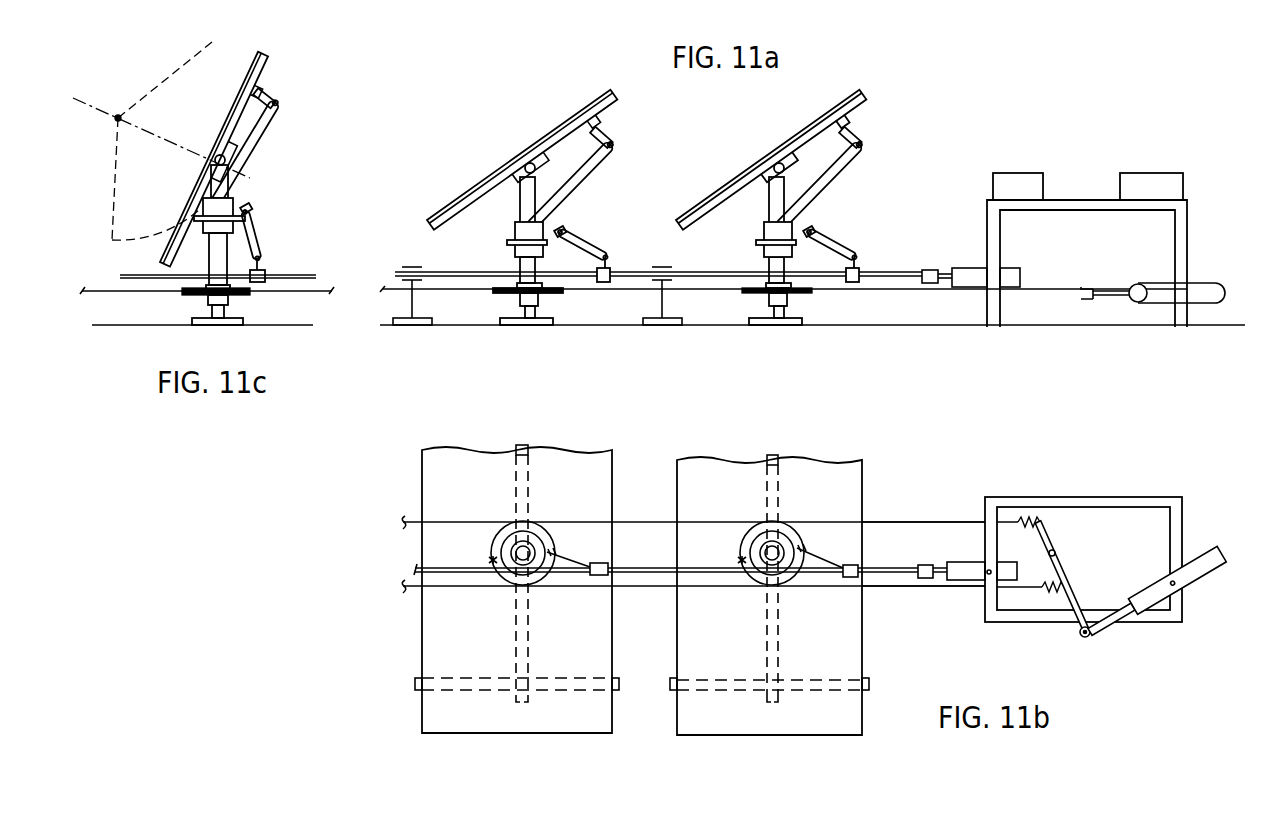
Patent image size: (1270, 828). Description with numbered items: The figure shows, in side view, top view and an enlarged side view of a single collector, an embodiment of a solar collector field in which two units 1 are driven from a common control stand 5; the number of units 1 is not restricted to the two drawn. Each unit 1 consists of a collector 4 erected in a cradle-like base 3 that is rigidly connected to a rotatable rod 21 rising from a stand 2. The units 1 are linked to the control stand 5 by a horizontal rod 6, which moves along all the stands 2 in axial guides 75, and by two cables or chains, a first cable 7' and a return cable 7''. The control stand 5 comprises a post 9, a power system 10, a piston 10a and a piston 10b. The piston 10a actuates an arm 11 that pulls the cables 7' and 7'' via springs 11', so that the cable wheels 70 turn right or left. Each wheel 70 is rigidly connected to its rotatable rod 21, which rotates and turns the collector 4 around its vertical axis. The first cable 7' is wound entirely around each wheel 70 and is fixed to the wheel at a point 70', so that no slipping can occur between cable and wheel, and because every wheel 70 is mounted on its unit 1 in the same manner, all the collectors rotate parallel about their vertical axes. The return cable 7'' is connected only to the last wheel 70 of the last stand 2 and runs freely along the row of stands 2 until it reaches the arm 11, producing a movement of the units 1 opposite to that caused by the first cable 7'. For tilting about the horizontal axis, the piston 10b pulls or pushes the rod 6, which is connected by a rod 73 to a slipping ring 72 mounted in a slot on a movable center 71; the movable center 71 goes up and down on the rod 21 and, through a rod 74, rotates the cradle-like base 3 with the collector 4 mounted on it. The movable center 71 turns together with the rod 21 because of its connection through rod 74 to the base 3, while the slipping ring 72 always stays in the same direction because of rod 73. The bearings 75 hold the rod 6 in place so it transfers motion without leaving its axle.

In FIG. 11A, the unit 1 is at (550, 180).
In FIG. 11A, the stand 2 is at (511, 325).
In FIG. 11C, the cradle-like base 3 is at (197, 232).
In FIG. 11A, the cradle-like base 3 is at (477, 212).
In FIG. 11B, the cradle-like base 3 is at (495, 680).
In FIG. 11C, the solar collector panel 4 is at (197, 208).
In FIG. 11A, the solar collector panel 4 is at (436, 212).
In FIG. 11B, the solar collector panel 4 is at (445, 460).
In FIG. 11A, the control stand 5 is at (1000, 312).
In FIG. 11A, the rod 6 is at (908, 282).
In FIG. 11B, the rod 6 is at (903, 562).
In FIG. 11A, the first cable 7' is at (785, 325).
In FIG. 11B, the first cable 7' is at (923, 527).
In FIG. 11B, the return cable 7'' is at (923, 607).
In FIG. 11A, the post 9 is at (1017, 175).
In FIG. 11A, the power system 10 is at (1153, 178).
In FIG. 11A, the piston 10a is at (1205, 284).
In FIG. 11B, the piston 10a is at (1198, 568).
In FIG. 11A, the piston 10b is at (973, 269).
In FIG. 11B, the piston 10b is at (967, 562).
In FIG. 11B, the arm 11 is at (1054, 590).
In FIG. 11B, the spring 11' is at (1040, 523).
In FIG. 11C, the rotatable rod 21 is at (217, 247).
In FIG. 11A, the rotatable rod 21 is at (792, 307).
In FIG. 11C, the cable wheel 70 is at (189, 304).
In FIG. 11A, the cable wheel 70 is at (758, 305).
In FIG. 11B, the fixing point 70' is at (758, 533).
In FIG. 11A, the movable center 71 is at (765, 248).
In FIG. 11A, the slipping ring 72 is at (758, 243).
In FIG. 11A, the rod 73 is at (842, 253).
In FIG. 11B, the rod 73 is at (822, 560).
In FIG. 11A, the rod 74 is at (840, 170).
In FIG. 11A, the bearing 75 is at (653, 323).